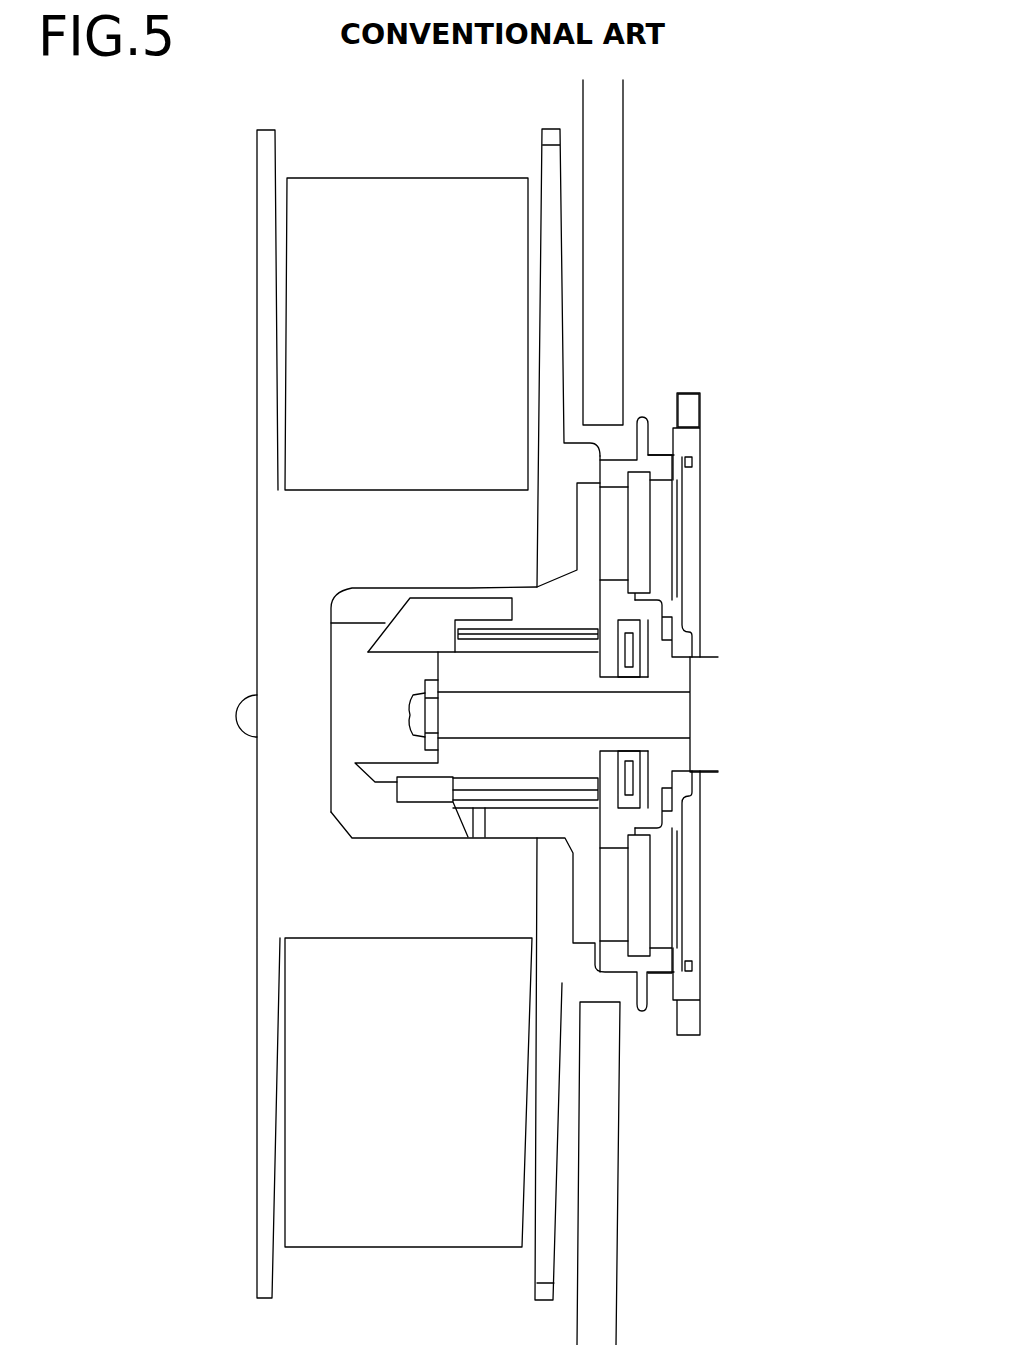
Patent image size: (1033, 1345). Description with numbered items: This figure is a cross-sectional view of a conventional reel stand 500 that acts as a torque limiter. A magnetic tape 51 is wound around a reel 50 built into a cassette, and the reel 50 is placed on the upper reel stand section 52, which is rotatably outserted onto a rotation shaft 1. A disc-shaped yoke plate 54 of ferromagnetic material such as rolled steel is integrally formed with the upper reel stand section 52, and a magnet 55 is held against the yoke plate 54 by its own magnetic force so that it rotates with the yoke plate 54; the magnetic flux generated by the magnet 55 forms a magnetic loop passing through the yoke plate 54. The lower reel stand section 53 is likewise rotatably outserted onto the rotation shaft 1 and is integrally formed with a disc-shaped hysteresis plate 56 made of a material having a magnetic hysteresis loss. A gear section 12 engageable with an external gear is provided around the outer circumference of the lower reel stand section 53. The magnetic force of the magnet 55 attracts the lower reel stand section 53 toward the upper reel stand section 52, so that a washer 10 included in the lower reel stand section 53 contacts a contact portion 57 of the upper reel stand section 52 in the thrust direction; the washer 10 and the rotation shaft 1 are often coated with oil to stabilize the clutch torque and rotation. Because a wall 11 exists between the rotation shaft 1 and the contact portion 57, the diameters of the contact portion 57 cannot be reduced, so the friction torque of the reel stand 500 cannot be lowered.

The reel stand 500 is at (771, 213).
The reel 50 is at (292, 543).
The magnetic tape 51 is at (365, 365).
The upper reel stand section 52 is at (480, 752).
The lower reel stand section 53 is at (703, 458).
The yoke plate 54 is at (638, 515).
The magnet 55 is at (665, 535).
The hysteresis plate 56 is at (693, 565).
The contact portion 57 is at (655, 820).
The rotation shaft 1 is at (675, 710).
The washer 10 is at (673, 807).
The wall 11 is at (660, 665).
The gear section 12 is at (683, 407).